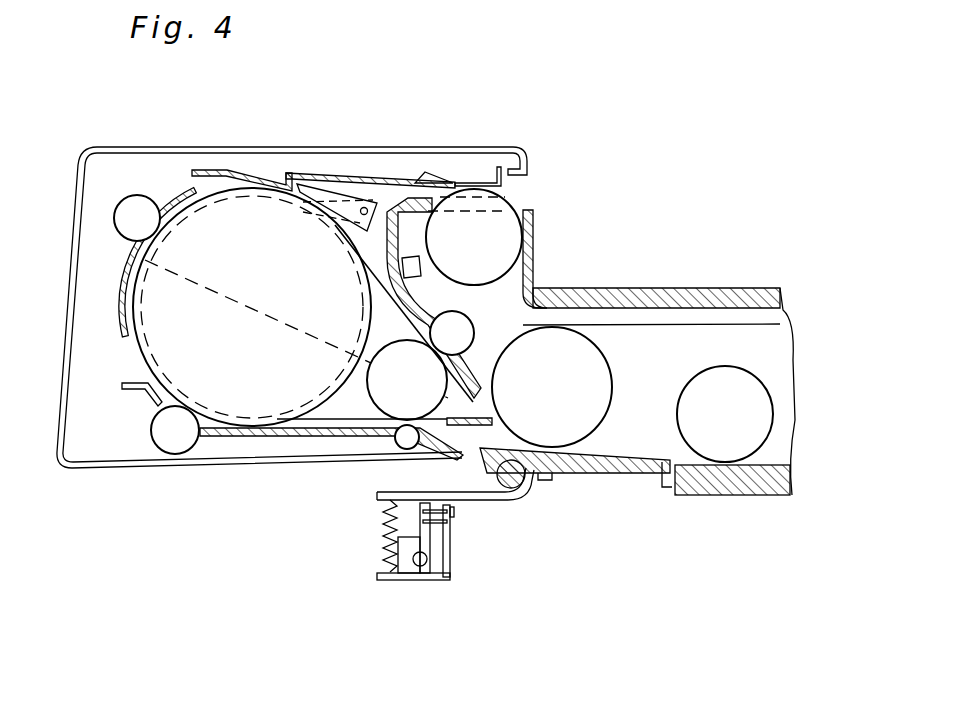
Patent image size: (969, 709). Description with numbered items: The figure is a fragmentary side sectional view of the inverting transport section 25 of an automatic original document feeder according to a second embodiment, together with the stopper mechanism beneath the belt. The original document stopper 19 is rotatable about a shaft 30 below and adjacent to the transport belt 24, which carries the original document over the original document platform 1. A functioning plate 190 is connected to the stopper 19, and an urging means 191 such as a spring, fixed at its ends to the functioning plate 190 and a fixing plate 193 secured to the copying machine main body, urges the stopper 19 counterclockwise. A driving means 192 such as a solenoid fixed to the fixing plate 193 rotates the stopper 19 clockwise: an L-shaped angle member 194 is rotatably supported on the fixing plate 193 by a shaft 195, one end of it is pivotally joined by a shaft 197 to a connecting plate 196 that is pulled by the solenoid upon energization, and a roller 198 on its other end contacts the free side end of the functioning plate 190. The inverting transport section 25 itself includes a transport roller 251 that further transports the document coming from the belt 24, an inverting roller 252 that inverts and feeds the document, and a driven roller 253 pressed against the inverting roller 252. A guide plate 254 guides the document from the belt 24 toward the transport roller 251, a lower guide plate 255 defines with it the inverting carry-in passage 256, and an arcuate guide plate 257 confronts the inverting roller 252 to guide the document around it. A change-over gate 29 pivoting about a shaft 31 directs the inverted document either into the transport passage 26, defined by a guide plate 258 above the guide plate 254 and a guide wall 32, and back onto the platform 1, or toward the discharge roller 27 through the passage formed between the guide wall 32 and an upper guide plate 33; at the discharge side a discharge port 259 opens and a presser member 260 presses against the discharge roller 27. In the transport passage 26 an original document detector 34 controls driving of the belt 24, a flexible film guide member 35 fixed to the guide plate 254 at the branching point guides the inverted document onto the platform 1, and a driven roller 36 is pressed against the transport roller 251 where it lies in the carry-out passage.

The original document platform 1 is at (746, 497).
The original document stopper 19 is at (607, 474).
The transport belt 24 is at (704, 324).
The inverting transport section 25 is at (146, 399).
The transport passage 26 is at (470, 330).
The discharge roller 27 is at (524, 200).
The change-over gate 29 is at (340, 183).
The shaft 30 is at (522, 488).
The shaft 31 is at (358, 198).
The guide wall 32 is at (393, 185).
The upper guide plate 33 is at (418, 200).
The original document detector 34 is at (427, 262).
The guide member 35 is at (493, 432).
The driven roller 36 is at (580, 289).
The functioning plate 190 is at (467, 494).
The urging means 191 is at (413, 547).
The driving means 192 is at (452, 524).
The fixing plate 193 is at (420, 581).
The L-shaped angle member 194 is at (437, 581).
The shaft 195 is at (451, 514).
The connecting plate 196 is at (407, 580).
The shaft 197 is at (427, 568).
The roller 198 is at (423, 510).
The transport roller 251 is at (370, 386).
The inverting roller 252 is at (293, 408).
The driven roller 253 is at (130, 197).
The guide plate 254 is at (337, 407).
The lower guide plate 255 is at (233, 437).
The inverting carry-in passage 256 is at (437, 426).
The arcuate guide plate 257 is at (178, 190).
The guide plate 258 is at (393, 318).
The discharge port 259 is at (520, 188).
The presser member 260 is at (445, 178).